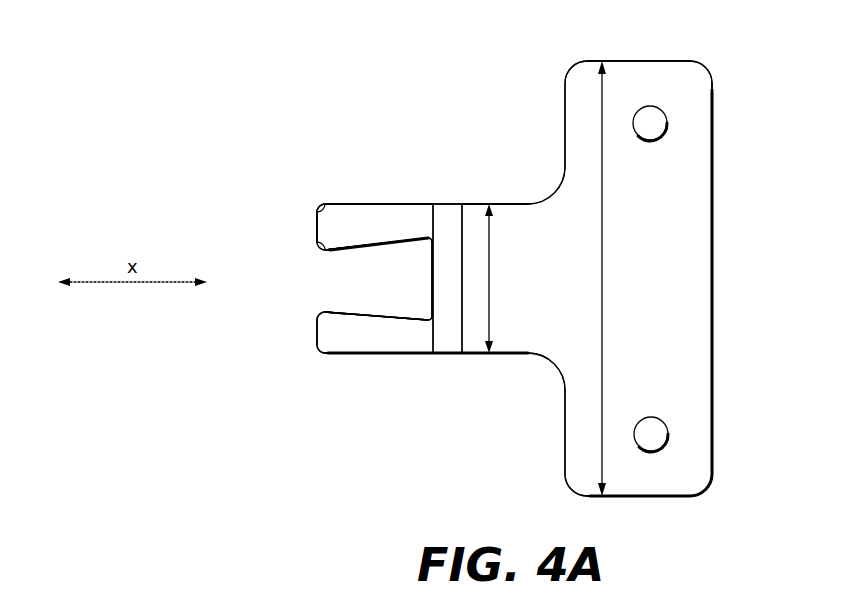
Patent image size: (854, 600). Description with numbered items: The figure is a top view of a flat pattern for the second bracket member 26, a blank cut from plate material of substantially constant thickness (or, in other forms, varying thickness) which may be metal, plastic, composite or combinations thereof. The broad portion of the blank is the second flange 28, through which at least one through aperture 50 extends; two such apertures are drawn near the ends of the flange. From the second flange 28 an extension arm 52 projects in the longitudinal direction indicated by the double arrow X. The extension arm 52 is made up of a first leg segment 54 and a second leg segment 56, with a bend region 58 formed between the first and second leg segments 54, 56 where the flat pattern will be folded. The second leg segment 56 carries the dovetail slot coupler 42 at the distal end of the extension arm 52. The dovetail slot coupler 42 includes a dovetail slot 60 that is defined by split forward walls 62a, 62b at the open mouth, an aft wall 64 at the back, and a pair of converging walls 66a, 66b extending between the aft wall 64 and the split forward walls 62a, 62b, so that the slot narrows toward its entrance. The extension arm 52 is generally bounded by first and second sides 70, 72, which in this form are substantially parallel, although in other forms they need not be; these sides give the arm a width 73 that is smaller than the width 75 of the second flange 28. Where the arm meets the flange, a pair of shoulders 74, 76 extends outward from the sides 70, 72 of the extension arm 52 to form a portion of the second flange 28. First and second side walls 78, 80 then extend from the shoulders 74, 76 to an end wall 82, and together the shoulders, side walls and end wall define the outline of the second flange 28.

The second bracket member 26 is at (753, 342).
The second flange 28 is at (667, 236).
The dovetail slot coupler 42 is at (311, 364).
The through aperture 50 is at (652, 122).
The extension arm 52 is at (328, 200).
The first leg segment 54 is at (492, 203).
The second leg segment 56 is at (357, 203).
The bend region 58 is at (448, 312).
The dovetail slot 60 is at (332, 268).
The split forward wall 62a is at (318, 340).
The split forward wall 62b is at (315, 213).
The aft wall 64 is at (432, 276).
The converging wall 66a is at (343, 316).
The converging wall 66b is at (330, 257).
The first side 70 is at (357, 355).
The second side 72 is at (407, 203).
The width 73 is at (490, 280).
The shoulder 74 is at (565, 432).
The width 75 is at (600, 280).
The shoulder 76 is at (565, 118).
The first side wall 78 is at (662, 498).
The second side wall 80 is at (632, 60).
The end wall 82 is at (713, 153).